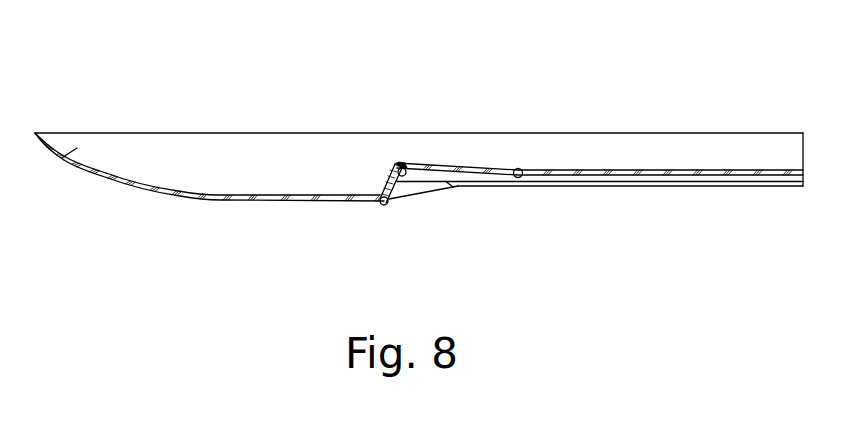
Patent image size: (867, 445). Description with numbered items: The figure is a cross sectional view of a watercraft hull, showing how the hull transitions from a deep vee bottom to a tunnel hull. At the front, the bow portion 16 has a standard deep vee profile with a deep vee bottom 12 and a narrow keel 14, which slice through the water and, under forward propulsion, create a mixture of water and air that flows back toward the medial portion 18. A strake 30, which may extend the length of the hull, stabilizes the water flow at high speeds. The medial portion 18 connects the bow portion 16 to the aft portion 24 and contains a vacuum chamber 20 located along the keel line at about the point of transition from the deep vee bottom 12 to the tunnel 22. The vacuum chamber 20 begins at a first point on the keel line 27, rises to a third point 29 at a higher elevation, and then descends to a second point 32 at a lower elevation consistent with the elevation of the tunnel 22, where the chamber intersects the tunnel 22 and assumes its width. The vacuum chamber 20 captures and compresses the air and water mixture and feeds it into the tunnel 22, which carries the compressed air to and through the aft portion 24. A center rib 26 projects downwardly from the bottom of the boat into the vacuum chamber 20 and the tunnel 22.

The deep vee bottom 12 is at (63, 157).
The narrow keel 14 is at (242, 201).
The bow portion 16 is at (232, 142).
The medial portion 18 is at (458, 142).
The vacuum chamber 20 is at (413, 193).
The tunnel 22 is at (584, 183).
The aft portion 24 is at (776, 143).
The center rib 26 is at (785, 188).
The first point on the keel line 27 is at (380, 205).
The third point 29 is at (396, 164).
The strake 30 is at (103, 178).
The second point 32 is at (518, 169).